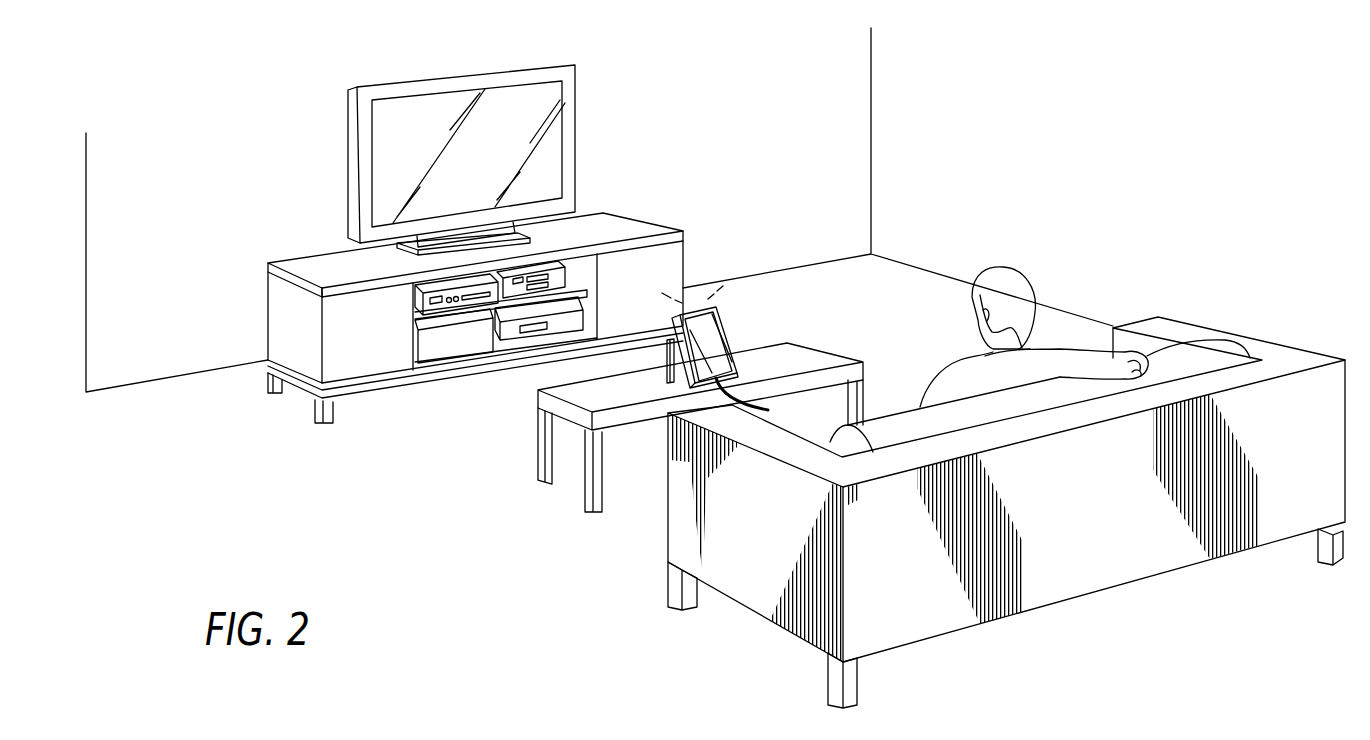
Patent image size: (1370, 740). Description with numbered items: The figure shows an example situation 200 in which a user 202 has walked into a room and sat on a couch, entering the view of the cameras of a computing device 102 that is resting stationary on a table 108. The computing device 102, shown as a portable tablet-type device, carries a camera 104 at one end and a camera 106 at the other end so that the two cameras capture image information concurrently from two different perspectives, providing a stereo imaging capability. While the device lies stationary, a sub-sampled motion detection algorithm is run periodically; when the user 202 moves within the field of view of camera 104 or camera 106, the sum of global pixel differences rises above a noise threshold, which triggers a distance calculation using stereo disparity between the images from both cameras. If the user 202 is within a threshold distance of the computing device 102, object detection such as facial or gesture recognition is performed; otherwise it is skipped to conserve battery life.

The example situation 200 is at (990, 141).
The user 202 is at (1018, 266).
The computing device 102 is at (728, 337).
The camera 104 is at (697, 309).
The camera 106 is at (760, 400).
The table 108 is at (812, 357).